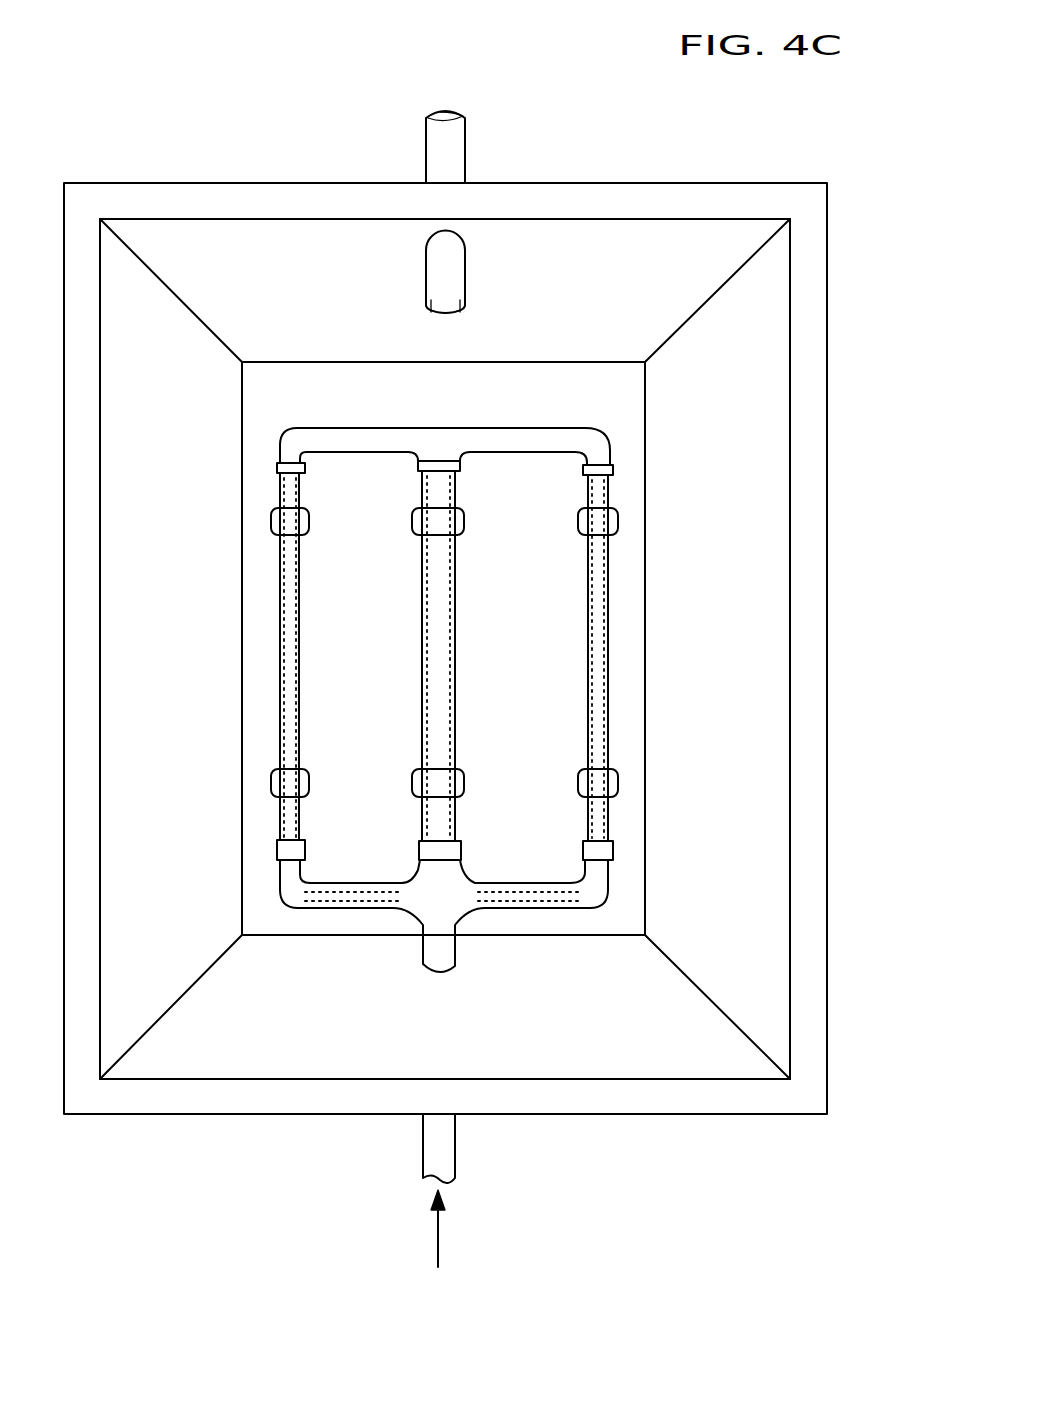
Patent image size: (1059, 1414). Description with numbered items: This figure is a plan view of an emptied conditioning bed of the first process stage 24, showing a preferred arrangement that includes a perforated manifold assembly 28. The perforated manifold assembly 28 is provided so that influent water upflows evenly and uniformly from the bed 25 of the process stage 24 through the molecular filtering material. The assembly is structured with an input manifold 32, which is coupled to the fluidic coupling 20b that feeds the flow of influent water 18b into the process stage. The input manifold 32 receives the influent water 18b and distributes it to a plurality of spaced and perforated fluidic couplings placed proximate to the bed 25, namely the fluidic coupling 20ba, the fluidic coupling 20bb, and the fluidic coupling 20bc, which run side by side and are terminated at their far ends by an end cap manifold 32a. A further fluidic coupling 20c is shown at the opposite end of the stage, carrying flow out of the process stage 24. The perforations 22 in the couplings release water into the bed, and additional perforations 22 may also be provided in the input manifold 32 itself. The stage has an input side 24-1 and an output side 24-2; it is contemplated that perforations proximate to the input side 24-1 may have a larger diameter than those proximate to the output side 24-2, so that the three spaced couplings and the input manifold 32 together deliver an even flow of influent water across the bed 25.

The first process stage 24 is at (850, 1150).
The input side of first process stage 24-1 is at (158, 1057).
The output side of first process stage 24-2 is at (206, 238).
The fluidic coupling 20c is at (434, 140).
The fluidic coupling 20b is at (430, 962).
The perforated fluidic coupling 20ba is at (292, 586).
The perforated fluidic coupling 20bb is at (438, 668).
The perforated fluidic coupling 20bc is at (598, 590).
The perforations 22 is at (455, 575).
The bed 25 is at (566, 412).
The perforated manifold assembly 28 is at (497, 699).
The input manifold 32 is at (453, 898).
The manifold end cap 32a is at (445, 437).
The system influent water flow 18b is at (440, 1243).